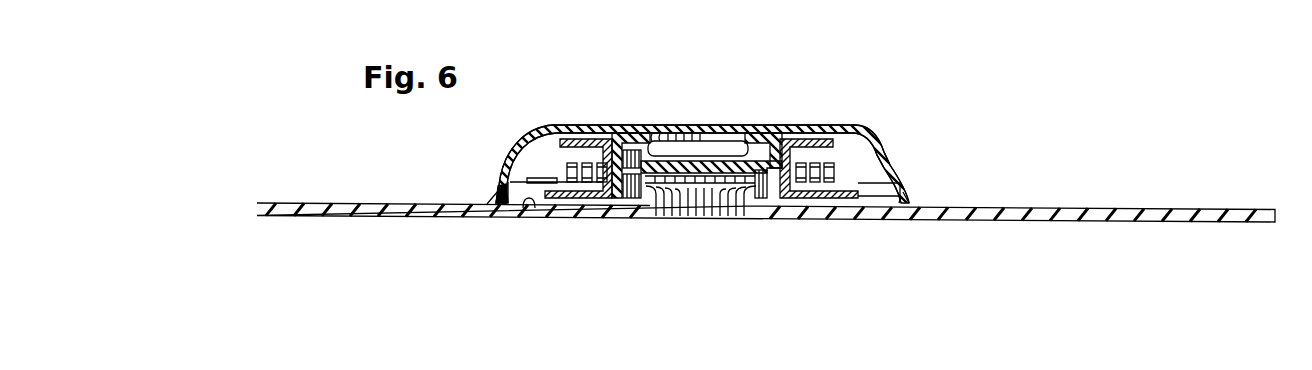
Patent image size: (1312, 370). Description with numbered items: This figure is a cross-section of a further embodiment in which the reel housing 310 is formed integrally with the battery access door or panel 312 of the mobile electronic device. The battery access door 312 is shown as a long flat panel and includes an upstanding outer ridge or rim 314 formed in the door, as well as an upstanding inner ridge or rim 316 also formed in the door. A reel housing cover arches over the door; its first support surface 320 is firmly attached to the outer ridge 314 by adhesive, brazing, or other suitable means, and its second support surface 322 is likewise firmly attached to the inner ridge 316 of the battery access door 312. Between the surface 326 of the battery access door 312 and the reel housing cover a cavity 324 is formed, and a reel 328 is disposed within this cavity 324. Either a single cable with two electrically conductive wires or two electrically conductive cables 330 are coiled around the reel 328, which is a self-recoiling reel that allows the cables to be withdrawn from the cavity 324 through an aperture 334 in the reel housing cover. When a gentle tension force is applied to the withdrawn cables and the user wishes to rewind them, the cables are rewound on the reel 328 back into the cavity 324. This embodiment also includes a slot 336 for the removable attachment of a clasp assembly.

The reel housing 310 is at (542, 117).
The battery access door or panel 312 is at (1036, 207).
The upstanding outer ridge or rim 314 is at (495, 195).
The upstanding inner ridge or rim 316 is at (667, 213).
The first support surface 320 is at (508, 176).
The second support surface 322 is at (745, 138).
The cavity 324 is at (560, 171).
The surface of battery access door 326 is at (531, 205).
The reel 328 is at (801, 148).
The electrically conductive cable 330 is at (561, 124).
The aperture 334 is at (896, 160).
The slot 336 is at (647, 132).